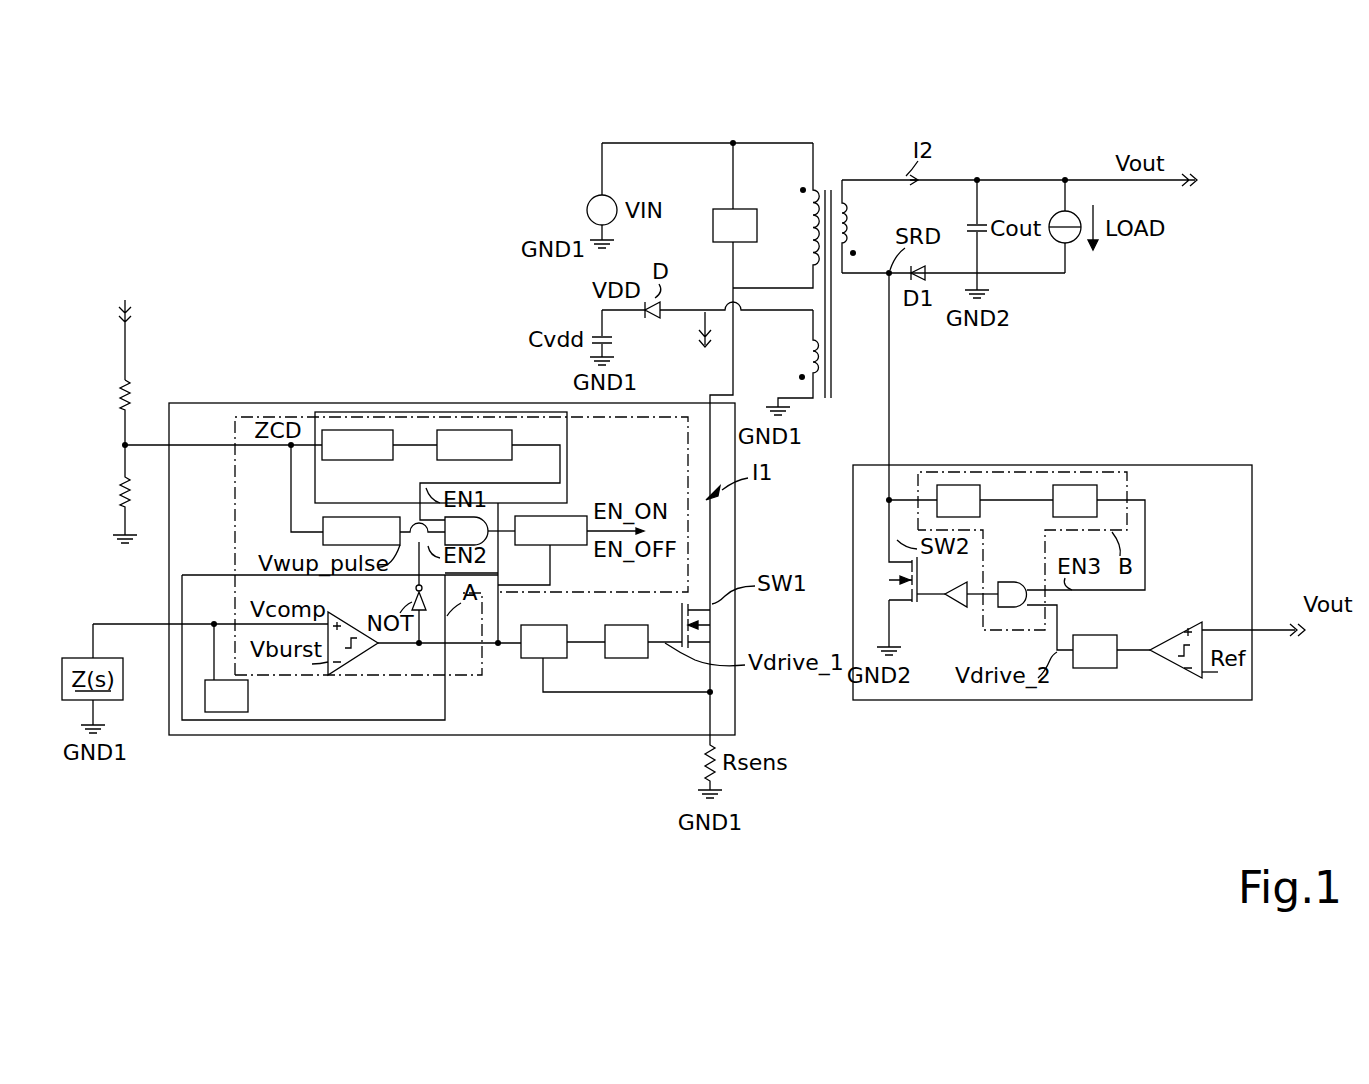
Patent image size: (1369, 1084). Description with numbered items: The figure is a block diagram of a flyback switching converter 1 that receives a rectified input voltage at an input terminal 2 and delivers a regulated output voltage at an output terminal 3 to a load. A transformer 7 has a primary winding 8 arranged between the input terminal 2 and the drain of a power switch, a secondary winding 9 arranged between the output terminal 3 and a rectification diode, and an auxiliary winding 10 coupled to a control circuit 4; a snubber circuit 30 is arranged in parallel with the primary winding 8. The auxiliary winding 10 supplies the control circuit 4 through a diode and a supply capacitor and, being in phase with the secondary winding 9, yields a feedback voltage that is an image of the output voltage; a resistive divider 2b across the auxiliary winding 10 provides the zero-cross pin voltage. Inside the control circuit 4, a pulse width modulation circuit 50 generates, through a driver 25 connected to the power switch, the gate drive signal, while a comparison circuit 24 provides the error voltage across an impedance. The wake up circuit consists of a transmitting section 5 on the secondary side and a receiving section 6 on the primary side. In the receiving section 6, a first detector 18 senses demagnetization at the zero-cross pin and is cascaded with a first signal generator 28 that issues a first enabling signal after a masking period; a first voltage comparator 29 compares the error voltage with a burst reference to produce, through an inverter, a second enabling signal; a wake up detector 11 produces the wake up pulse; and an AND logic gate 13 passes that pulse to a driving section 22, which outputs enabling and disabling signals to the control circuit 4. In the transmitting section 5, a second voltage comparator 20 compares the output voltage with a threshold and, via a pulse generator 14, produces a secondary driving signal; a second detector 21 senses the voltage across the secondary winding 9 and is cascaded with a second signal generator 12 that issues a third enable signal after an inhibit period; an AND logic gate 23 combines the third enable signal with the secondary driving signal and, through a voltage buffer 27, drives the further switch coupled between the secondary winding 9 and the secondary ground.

The switching converter 1 is at (488, 214).
The input terminal 2 is at (733, 128).
The auxiliary voltage divider 2b is at (97, 352).
The output terminal 3 is at (1019, 167).
The control circuit 4 is at (536, 748).
The transmitting section 5 is at (1112, 465).
The receiving section 6 is at (415, 408).
The transformer 7 is at (836, 292).
The primary winding 8 is at (813, 188).
The secondary winding 9 is at (843, 185).
The auxiliary winding 10 is at (816, 398).
The wake up detector 11 is at (374, 544).
The second signal generator 12 is at (1088, 513).
The AND logic gate 13 is at (473, 543).
The pulse generator 14 is at (1108, 663).
The first detector 18 is at (370, 457).
The second voltage comparator 20 is at (1172, 641).
The second detector 21 is at (971, 513).
The driving section 22 is at (564, 543).
The AND logic gate 23 is at (1010, 584).
The comparison circuit 24 is at (239, 708).
The driver 25 is at (639, 653).
The voltage buffer 27 is at (955, 601).
The first signal generator 28 is at (487, 457).
The first voltage comparator 29 is at (352, 613).
The snubber circuit 30 is at (722, 237).
The pulse width modulation circuit 50 is at (557, 653).